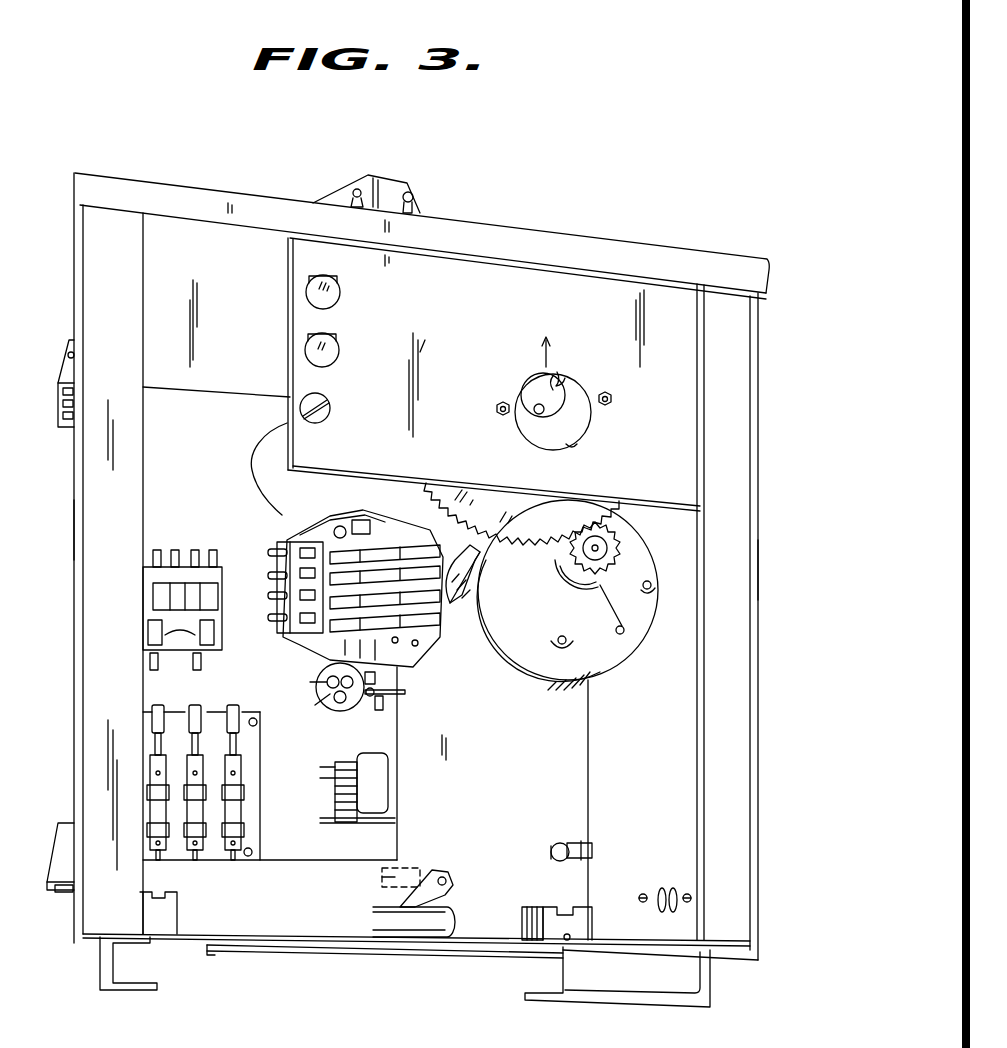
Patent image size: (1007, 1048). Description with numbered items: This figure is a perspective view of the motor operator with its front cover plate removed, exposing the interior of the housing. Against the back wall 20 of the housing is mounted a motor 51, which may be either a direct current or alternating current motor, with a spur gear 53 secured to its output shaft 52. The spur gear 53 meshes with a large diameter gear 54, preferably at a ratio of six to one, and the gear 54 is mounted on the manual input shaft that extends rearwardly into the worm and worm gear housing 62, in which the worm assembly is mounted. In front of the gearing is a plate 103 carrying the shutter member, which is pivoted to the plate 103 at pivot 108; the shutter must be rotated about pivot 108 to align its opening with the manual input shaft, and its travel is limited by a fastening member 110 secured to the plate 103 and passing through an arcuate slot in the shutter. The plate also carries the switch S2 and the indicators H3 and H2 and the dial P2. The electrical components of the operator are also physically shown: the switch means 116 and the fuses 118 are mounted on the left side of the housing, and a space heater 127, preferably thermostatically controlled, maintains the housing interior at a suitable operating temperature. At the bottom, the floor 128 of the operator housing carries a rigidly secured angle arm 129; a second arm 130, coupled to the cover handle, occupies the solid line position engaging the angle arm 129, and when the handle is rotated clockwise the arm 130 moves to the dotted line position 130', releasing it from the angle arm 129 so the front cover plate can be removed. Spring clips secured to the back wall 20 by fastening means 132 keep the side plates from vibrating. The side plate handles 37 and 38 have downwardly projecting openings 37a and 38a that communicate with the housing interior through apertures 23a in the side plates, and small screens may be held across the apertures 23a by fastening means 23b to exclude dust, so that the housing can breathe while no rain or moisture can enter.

The back wall 20 is at (510, 768).
The apertures 23a is at (670, 910).
The fastening means 23b is at (685, 893).
The side plate handle 37 is at (58, 370).
The openings 37a is at (66, 417).
The side plate handle 38 is at (50, 850).
The openings 38a is at (66, 891).
The motor 51 is at (607, 640).
The output shaft 52 is at (598, 548).
The spur gear 53 is at (612, 553).
The large diameter gear 54 is at (521, 514).
The housing 62 is at (318, 498).
The plate 103 is at (473, 324).
The pivot 108 is at (612, 399).
The fastening member 110 is at (495, 411).
The switch means 116 is at (237, 747).
The fuses 118 is at (243, 820).
The space heater 127 is at (342, 712).
The floor 128 is at (307, 917).
The angle arm 129 is at (456, 923).
The second arm 130 is at (459, 887).
The dotted line position of arm 130' is at (361, 886).
The fastening means 132 is at (557, 845).
The switch S2 is at (530, 385).
The indicator H3 is at (558, 372).
The indicator H2 is at (580, 445).
The dial P2 is at (525, 440).